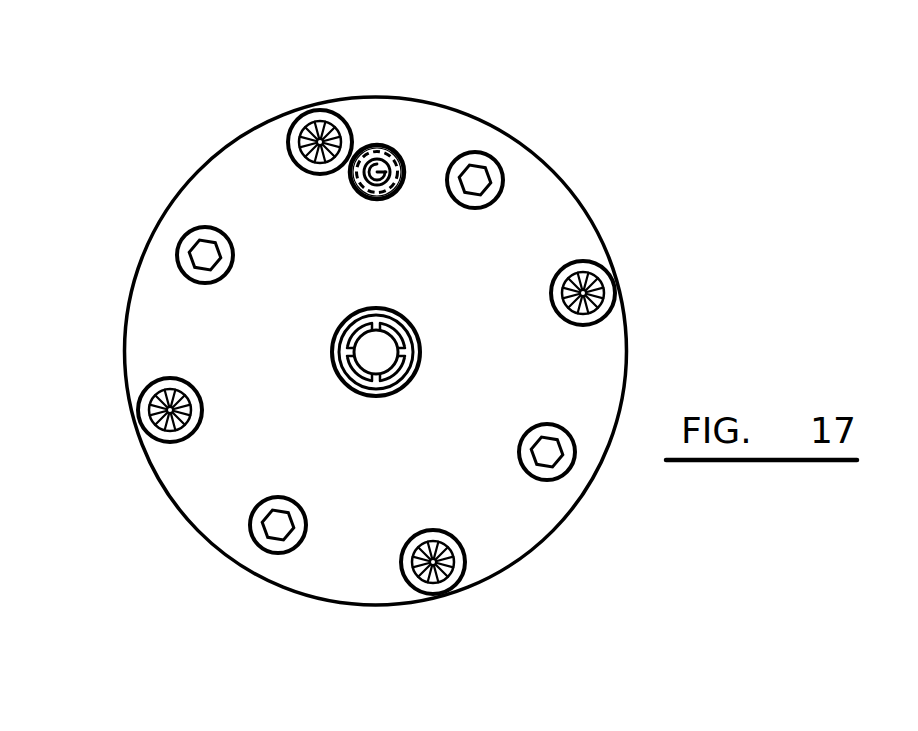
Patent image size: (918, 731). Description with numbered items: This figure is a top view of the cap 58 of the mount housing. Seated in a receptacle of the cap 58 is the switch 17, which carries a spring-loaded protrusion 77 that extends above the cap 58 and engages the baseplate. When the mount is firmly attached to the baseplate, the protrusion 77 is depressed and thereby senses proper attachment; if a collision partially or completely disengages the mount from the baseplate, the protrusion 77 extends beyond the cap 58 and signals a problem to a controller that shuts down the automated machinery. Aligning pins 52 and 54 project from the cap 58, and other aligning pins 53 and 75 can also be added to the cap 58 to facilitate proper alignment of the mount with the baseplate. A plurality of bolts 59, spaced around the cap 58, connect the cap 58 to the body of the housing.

The switch 17 is at (377, 146).
The aligning pin 52 is at (168, 410).
The aligning pin 53 is at (428, 588).
The aligning pin 54 is at (586, 293).
The cap 58 is at (540, 218).
The bolts 59 is at (478, 165).
The aligning pin 75 is at (300, 128).
The spring-loaded protrusion 77 is at (365, 176).